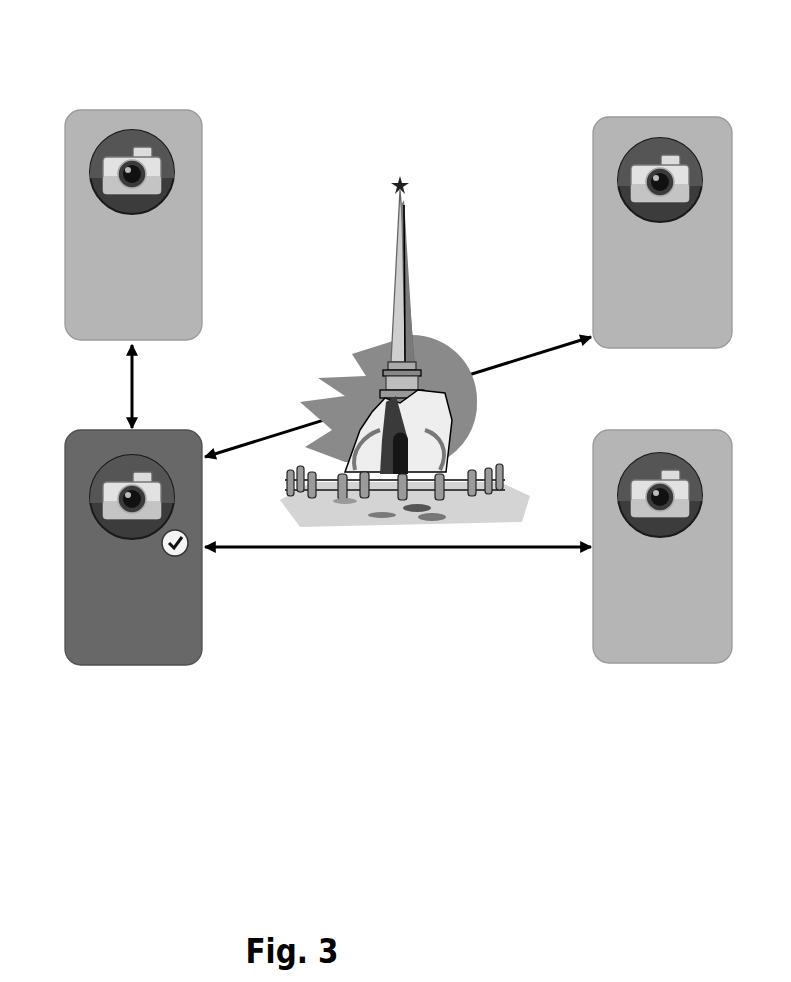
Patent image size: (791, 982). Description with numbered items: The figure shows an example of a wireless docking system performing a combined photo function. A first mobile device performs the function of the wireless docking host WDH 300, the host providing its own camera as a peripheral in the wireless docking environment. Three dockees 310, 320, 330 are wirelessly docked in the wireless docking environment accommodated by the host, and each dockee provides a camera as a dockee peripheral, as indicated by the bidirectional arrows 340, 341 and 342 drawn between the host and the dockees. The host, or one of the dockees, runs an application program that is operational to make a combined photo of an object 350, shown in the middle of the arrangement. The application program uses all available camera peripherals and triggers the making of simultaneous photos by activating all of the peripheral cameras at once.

The wireless docking host WDH 300 is at (113, 663).
The dockee 310 is at (181, 110).
The dockee 320 is at (652, 115).
The dockee 330 is at (642, 662).
The bidirectional arrow 340 is at (390, 552).
The bidirectional arrow 341 is at (527, 320).
The bidirectional arrow 342 is at (142, 402).
The object 350 is at (398, 305).